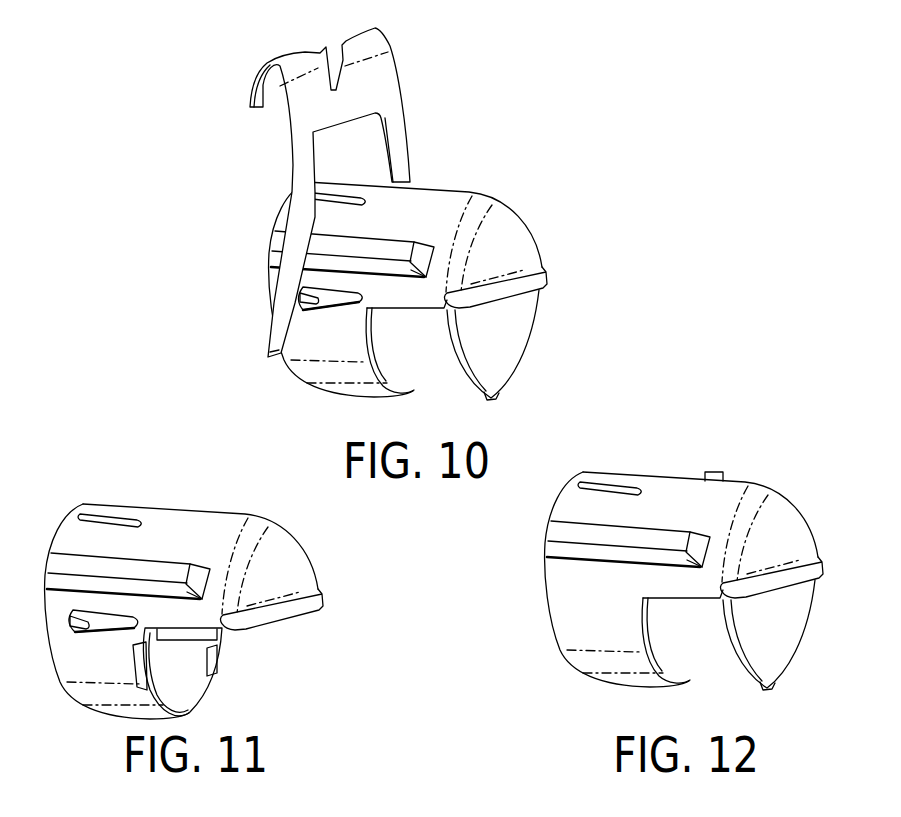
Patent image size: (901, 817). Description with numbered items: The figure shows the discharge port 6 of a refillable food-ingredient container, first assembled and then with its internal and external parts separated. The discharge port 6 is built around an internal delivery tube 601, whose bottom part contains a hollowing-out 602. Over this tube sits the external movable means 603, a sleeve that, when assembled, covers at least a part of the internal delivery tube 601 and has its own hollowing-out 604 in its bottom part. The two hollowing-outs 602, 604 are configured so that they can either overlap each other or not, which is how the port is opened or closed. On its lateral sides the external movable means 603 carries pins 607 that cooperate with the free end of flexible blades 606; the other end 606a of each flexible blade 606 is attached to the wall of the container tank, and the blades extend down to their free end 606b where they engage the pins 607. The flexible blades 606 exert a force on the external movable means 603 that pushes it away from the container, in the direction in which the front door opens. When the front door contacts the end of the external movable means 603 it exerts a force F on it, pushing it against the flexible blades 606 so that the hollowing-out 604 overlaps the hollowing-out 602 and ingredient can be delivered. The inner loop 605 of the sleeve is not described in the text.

In FIG. 10, the discharge port 6 is at (510, 77).
In FIG. 12, the internal delivery tube 601 is at (759, 466).
In FIG. 12, the hollowing-out 602 is at (730, 690).
In FIG. 11, the external movable means 603 is at (162, 490).
In FIG. 11, the hollowing-out 604 is at (270, 661).
In FIG. 12, the first clamping arm 605 is at (670, 648).
In FIG. 10, the flexible blades 606 is at (386, 86).
In FIG. 10, the end of flexible blade 606a is at (262, 97).
In FIG. 10, the second end of spring strap 606b is at (281, 354).
In FIG. 10, the pins 607 is at (312, 305).
In FIG. 11, the pins 607 is at (82, 622).
In FIG. 10, the force F is at (562, 243).